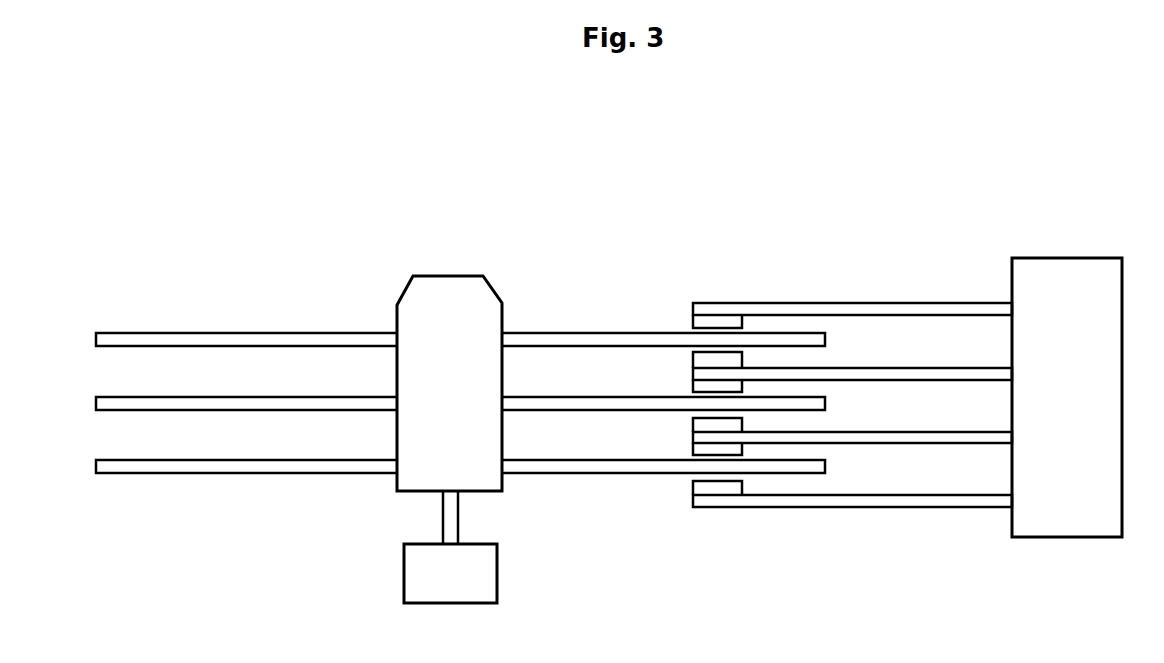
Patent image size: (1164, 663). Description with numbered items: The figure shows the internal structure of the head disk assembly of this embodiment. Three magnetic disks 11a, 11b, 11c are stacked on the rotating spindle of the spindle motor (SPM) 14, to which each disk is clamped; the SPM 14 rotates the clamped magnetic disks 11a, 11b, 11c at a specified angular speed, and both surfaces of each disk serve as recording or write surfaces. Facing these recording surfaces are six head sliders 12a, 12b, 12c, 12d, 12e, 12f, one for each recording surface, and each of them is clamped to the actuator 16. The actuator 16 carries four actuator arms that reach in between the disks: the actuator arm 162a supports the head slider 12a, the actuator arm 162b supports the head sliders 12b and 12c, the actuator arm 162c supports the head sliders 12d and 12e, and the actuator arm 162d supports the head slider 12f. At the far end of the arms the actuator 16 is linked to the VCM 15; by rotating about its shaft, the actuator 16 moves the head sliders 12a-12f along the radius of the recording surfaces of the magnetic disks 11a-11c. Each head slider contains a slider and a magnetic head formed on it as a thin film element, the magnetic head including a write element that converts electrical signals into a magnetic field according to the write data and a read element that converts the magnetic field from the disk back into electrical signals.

The magnetic disk 11a is at (238, 332).
The magnetic disk 11b is at (238, 396).
The magnetic disk 11c is at (238, 459).
The head slider 12a is at (693, 325).
The head slider 12b is at (693, 360).
The head slider 12c is at (693, 386).
The head slider 12d is at (693, 425).
The head slider 12e is at (693, 449).
The head slider 12f is at (693, 488).
The spindle motor (SPM) 14 is at (497, 572).
The VCM 15 is at (1070, 258).
The actuator 16 is at (907, 229).
The actuator arm 162a is at (866, 303).
The actuator arm 162b is at (868, 368).
The actuator arm 162c is at (868, 432).
The actuator arm 162d is at (868, 495).